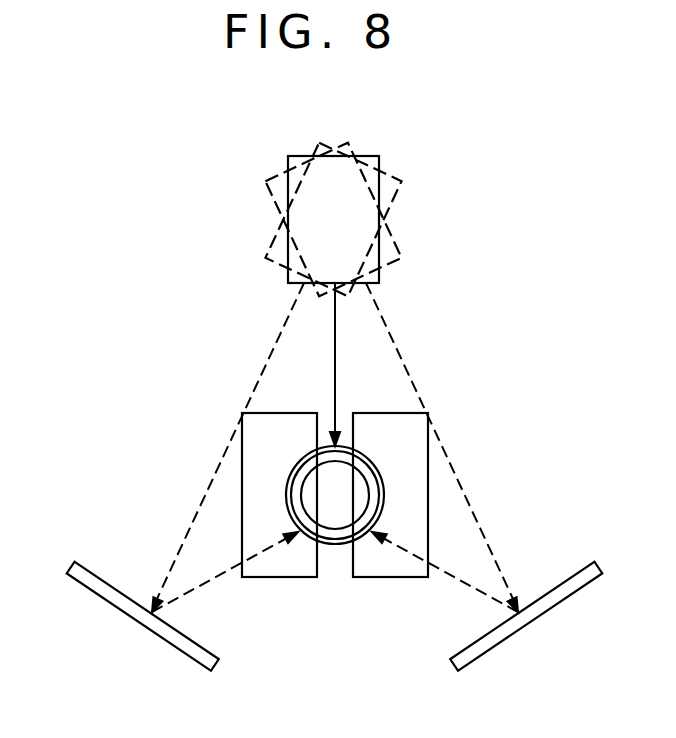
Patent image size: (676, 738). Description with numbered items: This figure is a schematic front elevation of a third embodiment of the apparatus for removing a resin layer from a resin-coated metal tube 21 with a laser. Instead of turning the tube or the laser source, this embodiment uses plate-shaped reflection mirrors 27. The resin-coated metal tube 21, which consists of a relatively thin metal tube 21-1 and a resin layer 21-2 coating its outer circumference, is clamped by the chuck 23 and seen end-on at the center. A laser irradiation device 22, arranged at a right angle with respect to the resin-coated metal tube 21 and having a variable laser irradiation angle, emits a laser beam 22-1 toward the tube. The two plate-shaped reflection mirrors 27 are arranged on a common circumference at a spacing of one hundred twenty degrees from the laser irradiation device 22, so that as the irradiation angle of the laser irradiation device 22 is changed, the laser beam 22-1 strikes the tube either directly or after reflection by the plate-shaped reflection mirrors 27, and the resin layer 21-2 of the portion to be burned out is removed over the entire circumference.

The laser irradiation device 22 is at (380, 189).
The laser beam 22-1 is at (268, 356).
The chuck 23 is at (410, 437).
The resin-coated metal tube 21 is at (336, 476).
The metal tube 21-1 is at (299, 493).
The resin layer 21-2 is at (385, 489).
The plate-shaped reflection mirrors 27 is at (115, 600).